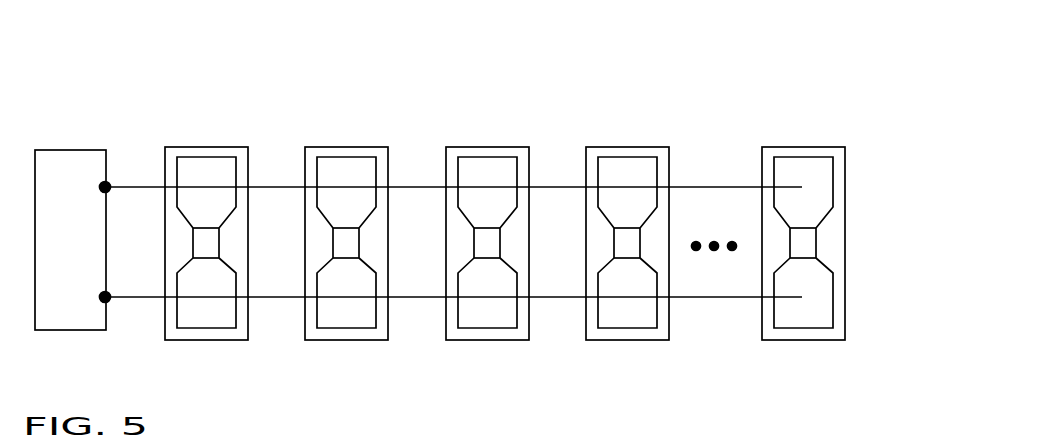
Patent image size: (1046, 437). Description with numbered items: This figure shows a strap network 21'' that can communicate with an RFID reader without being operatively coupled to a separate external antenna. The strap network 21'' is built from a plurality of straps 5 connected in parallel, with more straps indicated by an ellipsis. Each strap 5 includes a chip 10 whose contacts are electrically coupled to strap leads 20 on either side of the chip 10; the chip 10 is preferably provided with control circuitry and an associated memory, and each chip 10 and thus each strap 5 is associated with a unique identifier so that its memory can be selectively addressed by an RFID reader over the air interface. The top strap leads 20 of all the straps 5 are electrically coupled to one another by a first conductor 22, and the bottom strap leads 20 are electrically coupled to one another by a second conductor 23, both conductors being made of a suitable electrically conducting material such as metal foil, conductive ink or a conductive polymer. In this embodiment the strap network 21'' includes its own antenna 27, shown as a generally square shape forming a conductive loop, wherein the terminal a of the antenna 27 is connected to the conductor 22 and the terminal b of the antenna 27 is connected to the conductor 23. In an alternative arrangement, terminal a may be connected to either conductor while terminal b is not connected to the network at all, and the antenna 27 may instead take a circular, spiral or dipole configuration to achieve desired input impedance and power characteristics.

The antenna 27 is at (60, 150).
The first conductor 22 is at (136, 187).
The second conductor 23 is at (125, 297).
The terminal a is at (105, 187).
The terminal b is at (105, 297).
The strap 5 is at (213, 147).
The strap leads 20 is at (228, 167).
The chip 10 is at (208, 243).
The strap network 21'' is at (534, 190).